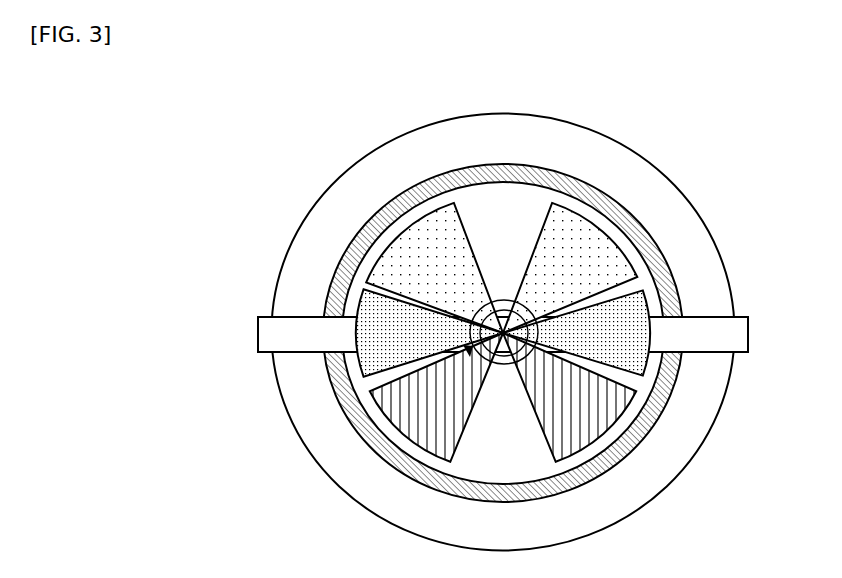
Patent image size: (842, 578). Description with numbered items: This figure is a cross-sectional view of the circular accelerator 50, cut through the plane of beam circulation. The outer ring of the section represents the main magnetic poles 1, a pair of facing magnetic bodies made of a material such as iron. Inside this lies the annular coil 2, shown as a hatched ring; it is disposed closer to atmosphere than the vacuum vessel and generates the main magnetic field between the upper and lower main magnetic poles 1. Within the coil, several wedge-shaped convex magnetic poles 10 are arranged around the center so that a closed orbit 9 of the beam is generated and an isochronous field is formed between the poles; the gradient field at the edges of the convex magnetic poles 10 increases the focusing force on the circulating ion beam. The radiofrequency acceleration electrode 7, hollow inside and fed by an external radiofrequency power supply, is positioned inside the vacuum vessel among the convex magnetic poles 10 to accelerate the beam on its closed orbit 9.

The accelerator 50 is at (738, 102).
The main magnetic poles 1 is at (603, 147).
The annular coil 2 is at (376, 223).
The radiofrequency acceleration electrode 7 is at (638, 318).
The closed orbit 9 is at (502, 318).
The convex magnetic poles 10 is at (583, 250).